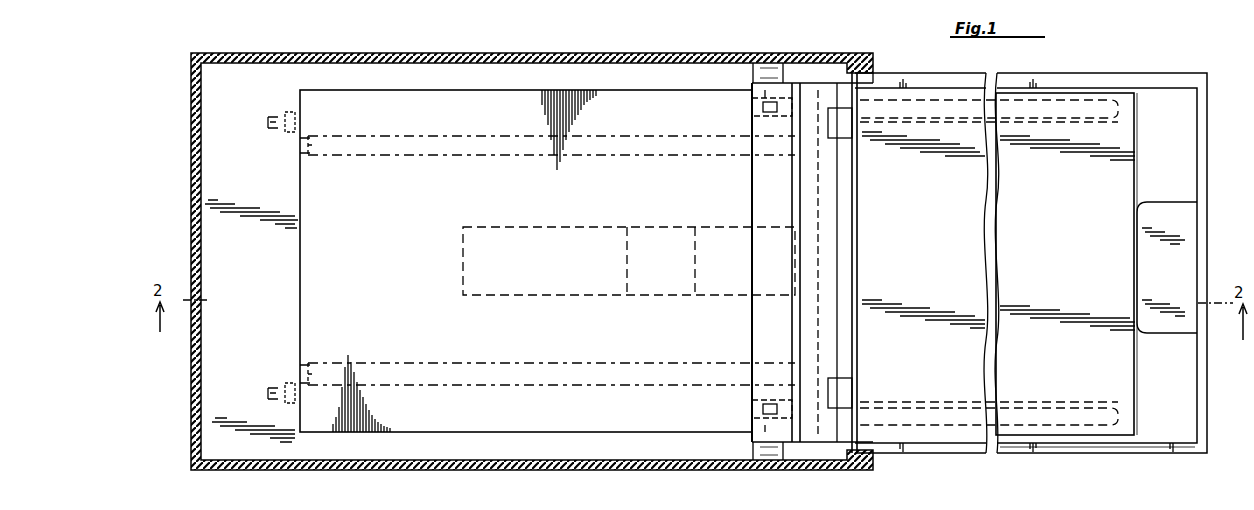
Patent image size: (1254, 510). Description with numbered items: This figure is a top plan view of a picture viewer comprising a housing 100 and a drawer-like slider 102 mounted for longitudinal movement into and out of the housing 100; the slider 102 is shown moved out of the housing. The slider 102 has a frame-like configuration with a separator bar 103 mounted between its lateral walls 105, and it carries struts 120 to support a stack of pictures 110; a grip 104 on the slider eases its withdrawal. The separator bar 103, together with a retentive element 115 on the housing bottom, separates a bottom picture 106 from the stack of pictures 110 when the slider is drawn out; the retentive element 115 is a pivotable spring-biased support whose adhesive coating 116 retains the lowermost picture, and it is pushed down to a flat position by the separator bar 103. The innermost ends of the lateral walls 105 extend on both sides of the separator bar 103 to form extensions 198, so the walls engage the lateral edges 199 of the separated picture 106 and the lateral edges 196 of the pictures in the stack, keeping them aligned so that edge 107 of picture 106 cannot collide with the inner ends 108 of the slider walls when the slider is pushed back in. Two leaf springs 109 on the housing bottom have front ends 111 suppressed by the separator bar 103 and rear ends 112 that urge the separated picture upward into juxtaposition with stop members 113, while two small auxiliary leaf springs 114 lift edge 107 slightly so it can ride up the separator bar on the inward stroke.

The housing 100 is at (379, 46).
The slider 102 is at (1075, 455).
The separator bar 103 is at (845, 267).
The grip 104 is at (1193, 210).
The lateral walls 105 is at (898, 78).
The bottom picture 106 is at (522, 100).
The edge 107 is at (795, 195).
The inner ends 108 is at (750, 76).
The leaf springs 109 is at (508, 168).
The stack of pictures 110 is at (960, 422).
The front ends 111 is at (790, 152).
The rear ends 112 is at (300, 146).
The stop members 113 is at (266, 122).
The auxiliary leaf springs 114 is at (752, 104).
The retentive element 115 is at (590, 226).
The adhesive coating 116 is at (735, 250).
The struts 120 is at (1050, 124).
The lateral edges 196 is at (1072, 93).
The extensions 198 is at (805, 68).
The lateral edges 199 is at (593, 90).